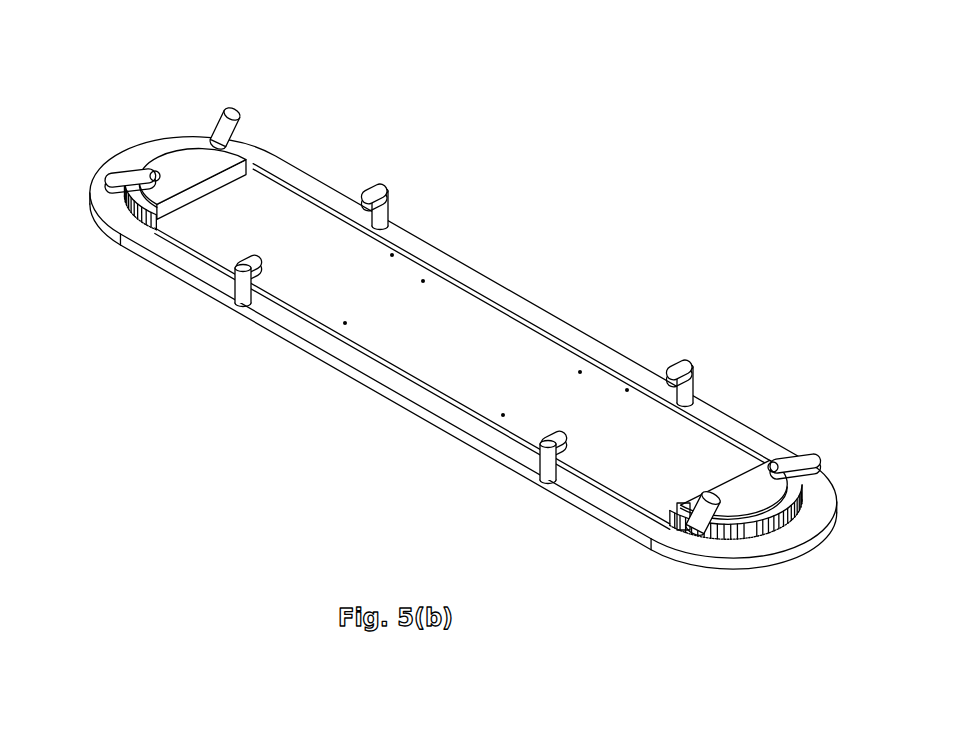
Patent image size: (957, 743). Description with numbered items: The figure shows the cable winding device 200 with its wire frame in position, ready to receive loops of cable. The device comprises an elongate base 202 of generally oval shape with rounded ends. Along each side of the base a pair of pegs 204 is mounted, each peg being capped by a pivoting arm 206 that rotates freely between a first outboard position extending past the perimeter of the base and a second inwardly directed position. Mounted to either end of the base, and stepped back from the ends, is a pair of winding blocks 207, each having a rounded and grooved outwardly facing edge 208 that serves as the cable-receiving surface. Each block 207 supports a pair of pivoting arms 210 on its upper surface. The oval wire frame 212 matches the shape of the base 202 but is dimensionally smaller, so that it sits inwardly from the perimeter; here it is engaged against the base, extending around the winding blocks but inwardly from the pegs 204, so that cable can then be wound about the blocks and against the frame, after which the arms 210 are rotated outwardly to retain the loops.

The cable winding device 200 is at (280, 403).
The elongate base 202 is at (486, 335).
The pegs 204 is at (395, 185).
The pivoting arm 206 is at (365, 202).
The winding blocks 207 is at (160, 160).
The outwardly facing edge 208 is at (720, 543).
The pivoting arms 210 is at (220, 120).
The oval wire frame 212 is at (453, 280).